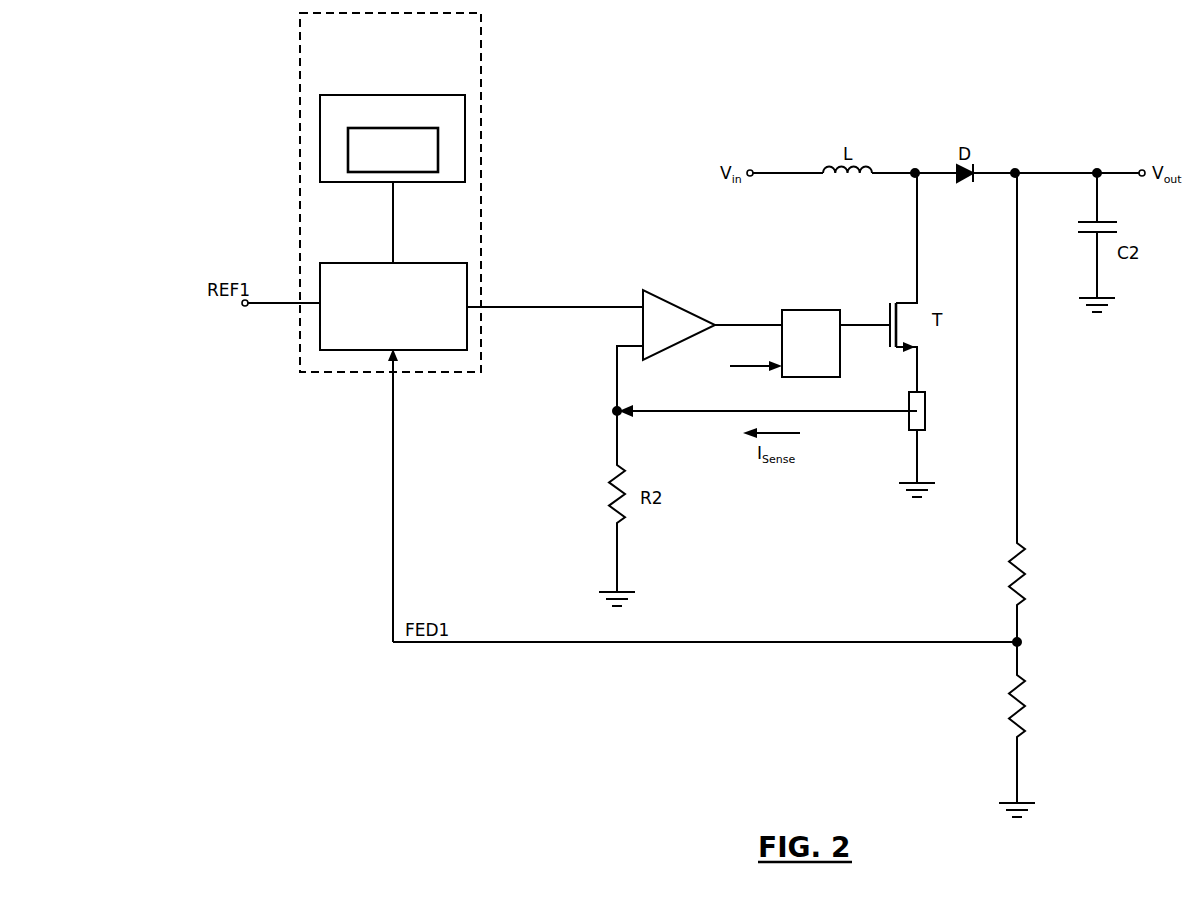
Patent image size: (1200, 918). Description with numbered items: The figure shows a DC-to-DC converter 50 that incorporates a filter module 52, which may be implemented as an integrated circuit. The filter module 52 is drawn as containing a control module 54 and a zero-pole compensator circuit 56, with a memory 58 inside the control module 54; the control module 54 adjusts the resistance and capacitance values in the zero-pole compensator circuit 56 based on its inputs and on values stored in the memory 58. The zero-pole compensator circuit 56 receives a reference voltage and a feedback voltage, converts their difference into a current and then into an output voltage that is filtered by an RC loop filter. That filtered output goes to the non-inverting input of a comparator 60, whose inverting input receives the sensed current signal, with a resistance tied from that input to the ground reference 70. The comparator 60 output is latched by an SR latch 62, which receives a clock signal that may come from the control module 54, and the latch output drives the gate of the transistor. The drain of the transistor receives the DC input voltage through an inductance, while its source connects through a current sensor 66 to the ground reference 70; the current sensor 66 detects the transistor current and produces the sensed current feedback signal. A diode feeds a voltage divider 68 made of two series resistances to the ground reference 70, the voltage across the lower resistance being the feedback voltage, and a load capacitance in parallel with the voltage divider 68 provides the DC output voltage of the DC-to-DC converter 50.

The DC-to-DC converter 50 is at (215, 76).
The filter module 52 is at (484, 181).
The control module 54 is at (357, 95).
The zero-pole compensator circuit 56 is at (357, 263).
The memory 58 is at (415, 172).
The comparator 60 is at (673, 304).
The SR latch 62 is at (815, 310).
The current sensor 66 is at (926, 410).
The voltage divider 68 is at (1088, 552).
The ground reference 70 is at (622, 592).